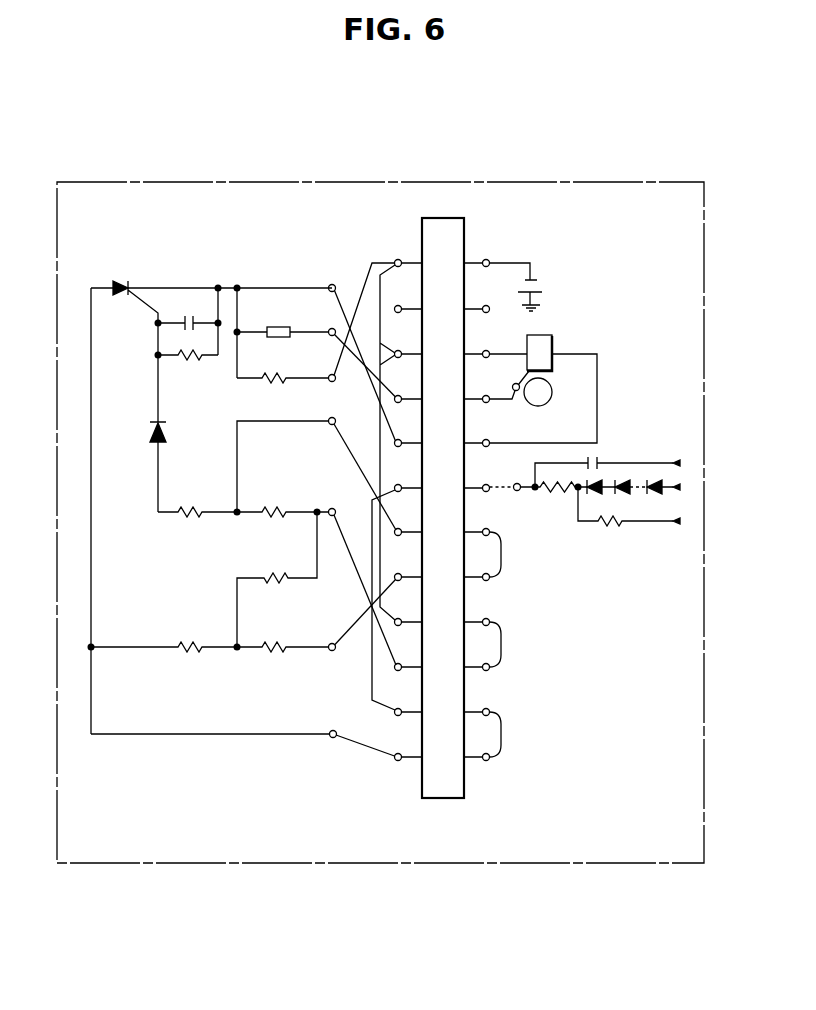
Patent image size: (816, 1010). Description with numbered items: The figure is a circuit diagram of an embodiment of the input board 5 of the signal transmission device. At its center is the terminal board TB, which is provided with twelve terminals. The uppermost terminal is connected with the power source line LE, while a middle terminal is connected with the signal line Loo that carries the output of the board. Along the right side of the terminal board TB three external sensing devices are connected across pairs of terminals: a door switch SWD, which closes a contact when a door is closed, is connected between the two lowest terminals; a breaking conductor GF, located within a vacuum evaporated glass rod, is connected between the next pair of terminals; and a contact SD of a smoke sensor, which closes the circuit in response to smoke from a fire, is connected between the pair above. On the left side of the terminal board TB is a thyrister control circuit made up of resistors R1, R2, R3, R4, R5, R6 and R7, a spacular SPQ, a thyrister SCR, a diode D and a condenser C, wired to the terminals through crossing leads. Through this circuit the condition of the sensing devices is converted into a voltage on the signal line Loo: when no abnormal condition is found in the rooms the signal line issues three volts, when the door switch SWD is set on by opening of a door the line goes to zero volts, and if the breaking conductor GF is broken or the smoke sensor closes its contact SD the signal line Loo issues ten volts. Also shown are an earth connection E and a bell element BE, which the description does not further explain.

The input board 5 is at (413, 182).
The terminal board TB is at (443, 798).
The thyrister SCR is at (131, 293).
The condenser C is at (188, 321).
The resistor R1 is at (187, 352).
The resistor R2 is at (199, 523).
The resistor R3 is at (166, 658).
The resistor R4 is at (283, 389).
The resistor R5 is at (283, 480).
The resistor R6 is at (283, 658).
The resistor R7 is at (277, 579).
The diode D is at (148, 433).
The spacular SPQ is at (281, 333).
The power source line LE is at (512, 263).
The earth E is at (546, 278).
The bell BE is at (544, 385).
The signal line Loo is at (517, 491).
The contact of smoke sensor SD is at (510, 554).
The breaking conductor GF is at (509, 644).
The door switch SWD is at (517, 734).